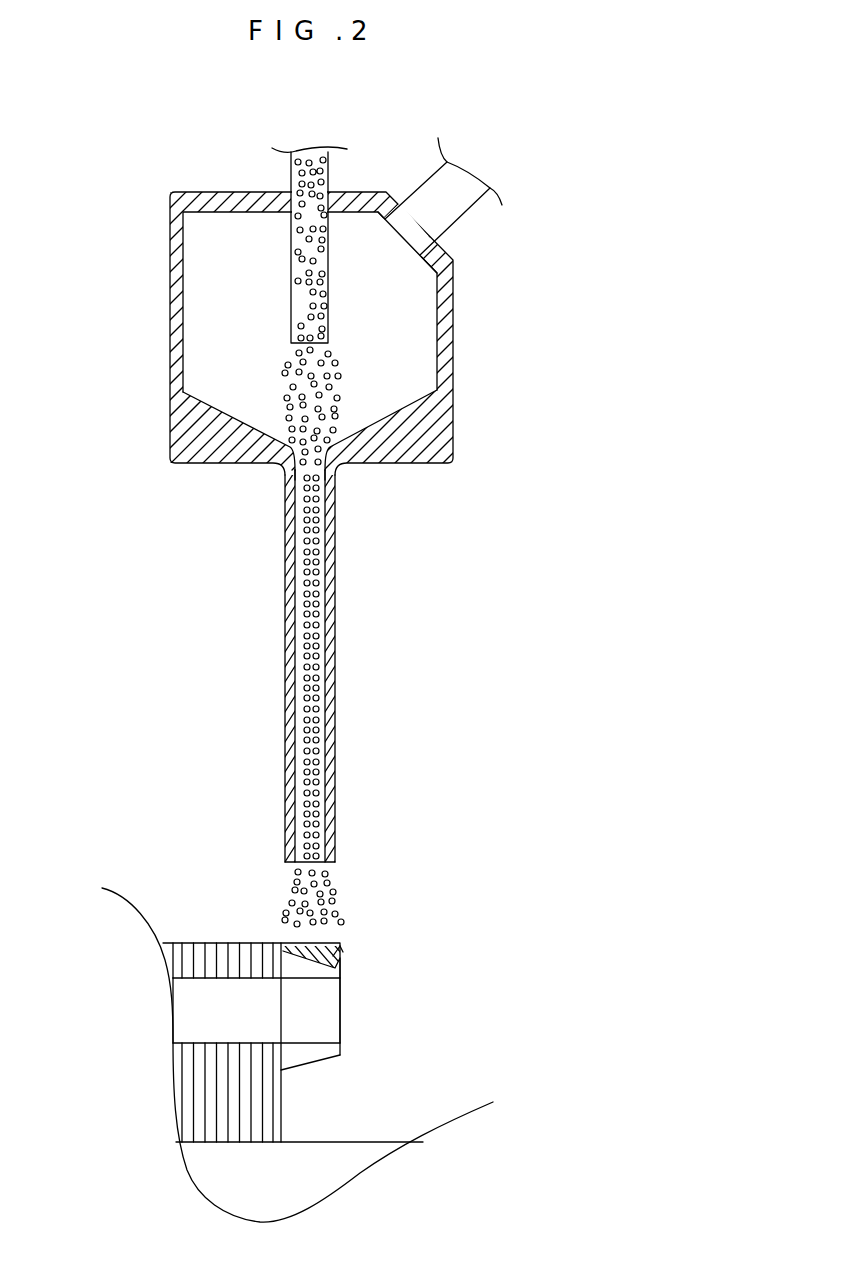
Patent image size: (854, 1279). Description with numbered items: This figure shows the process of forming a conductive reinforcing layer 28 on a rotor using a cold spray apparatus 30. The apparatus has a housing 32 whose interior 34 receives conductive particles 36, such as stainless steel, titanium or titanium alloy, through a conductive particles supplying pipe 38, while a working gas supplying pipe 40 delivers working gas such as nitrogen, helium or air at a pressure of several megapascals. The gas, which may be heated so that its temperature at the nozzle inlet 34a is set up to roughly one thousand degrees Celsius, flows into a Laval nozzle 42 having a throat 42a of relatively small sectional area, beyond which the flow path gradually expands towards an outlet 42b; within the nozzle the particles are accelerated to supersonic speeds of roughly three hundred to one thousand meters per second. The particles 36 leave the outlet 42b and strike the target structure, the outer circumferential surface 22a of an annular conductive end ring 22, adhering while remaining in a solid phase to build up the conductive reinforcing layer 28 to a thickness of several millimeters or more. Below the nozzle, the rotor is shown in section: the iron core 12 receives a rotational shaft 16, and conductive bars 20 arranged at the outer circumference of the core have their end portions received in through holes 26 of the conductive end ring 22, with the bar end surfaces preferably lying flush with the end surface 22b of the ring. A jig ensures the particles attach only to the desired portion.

The iron core 12 is at (205, 942).
The rotational shaft 16 is at (370, 1152).
The conductive bar 20 is at (222, 1008).
The annular conductive end ring 22 is at (333, 970).
The outer circumferential surface 22a is at (342, 952).
The end surface 22b is at (342, 1033).
The through hole 26 is at (321, 1046).
The conductive reinforcing layer 28 is at (343, 948).
The cold spray apparatus 30 is at (133, 237).
The housing 32 is at (455, 418).
The interior 34 is at (212, 348).
The nozzle inlet 34a is at (283, 404).
The conductive particles 36 is at (307, 602).
The conductive particles supplying pipe 38 is at (292, 176).
The working gas supplying pipe 40 is at (450, 207).
The Laval nozzle 42 is at (333, 685).
The throat 42a is at (318, 470).
The outlet 42b is at (297, 867).